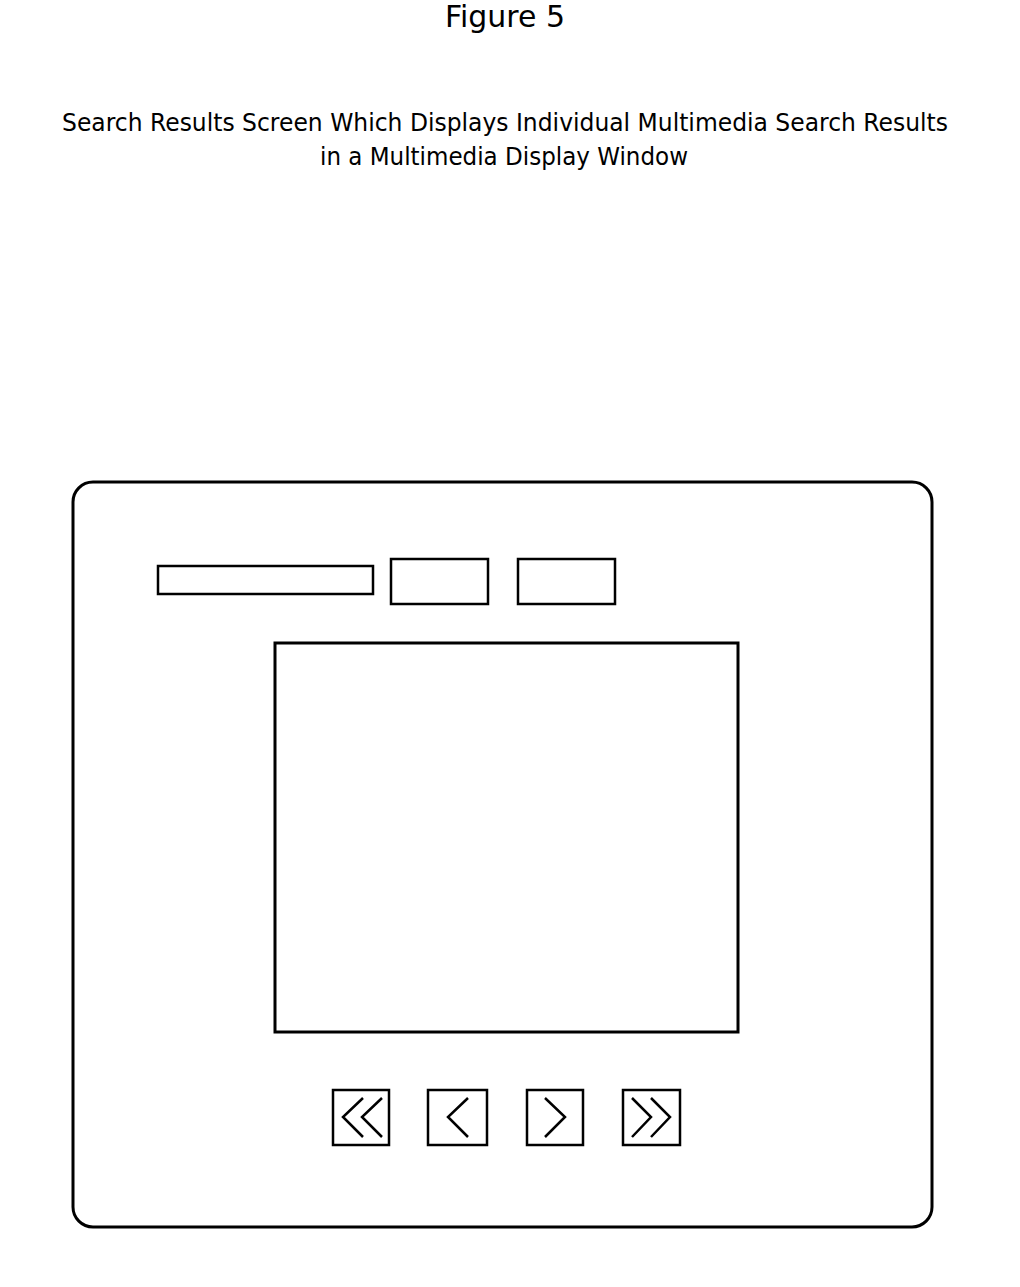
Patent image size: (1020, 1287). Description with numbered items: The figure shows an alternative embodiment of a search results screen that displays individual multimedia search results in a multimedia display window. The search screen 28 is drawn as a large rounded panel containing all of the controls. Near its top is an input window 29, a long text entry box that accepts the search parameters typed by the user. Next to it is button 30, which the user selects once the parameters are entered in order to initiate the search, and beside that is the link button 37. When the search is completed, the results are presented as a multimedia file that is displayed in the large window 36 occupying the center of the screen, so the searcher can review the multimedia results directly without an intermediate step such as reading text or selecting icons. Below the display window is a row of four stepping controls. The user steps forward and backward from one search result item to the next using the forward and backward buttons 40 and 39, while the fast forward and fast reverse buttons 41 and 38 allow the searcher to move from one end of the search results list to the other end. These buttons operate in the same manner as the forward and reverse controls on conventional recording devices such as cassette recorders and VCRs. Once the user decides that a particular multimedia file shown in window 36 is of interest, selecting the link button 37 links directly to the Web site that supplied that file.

The search screen 28 is at (222, 389).
The input window 29 is at (225, 565).
The search button 30 is at (458, 559).
The link button 37 is at (585, 559).
The multimedia display window 36 is at (275, 888).
The fast reverse button 38 is at (362, 1145).
The backward button 39 is at (458, 1145).
The forward button 40 is at (555, 1145).
The fast forward button 41 is at (652, 1145).